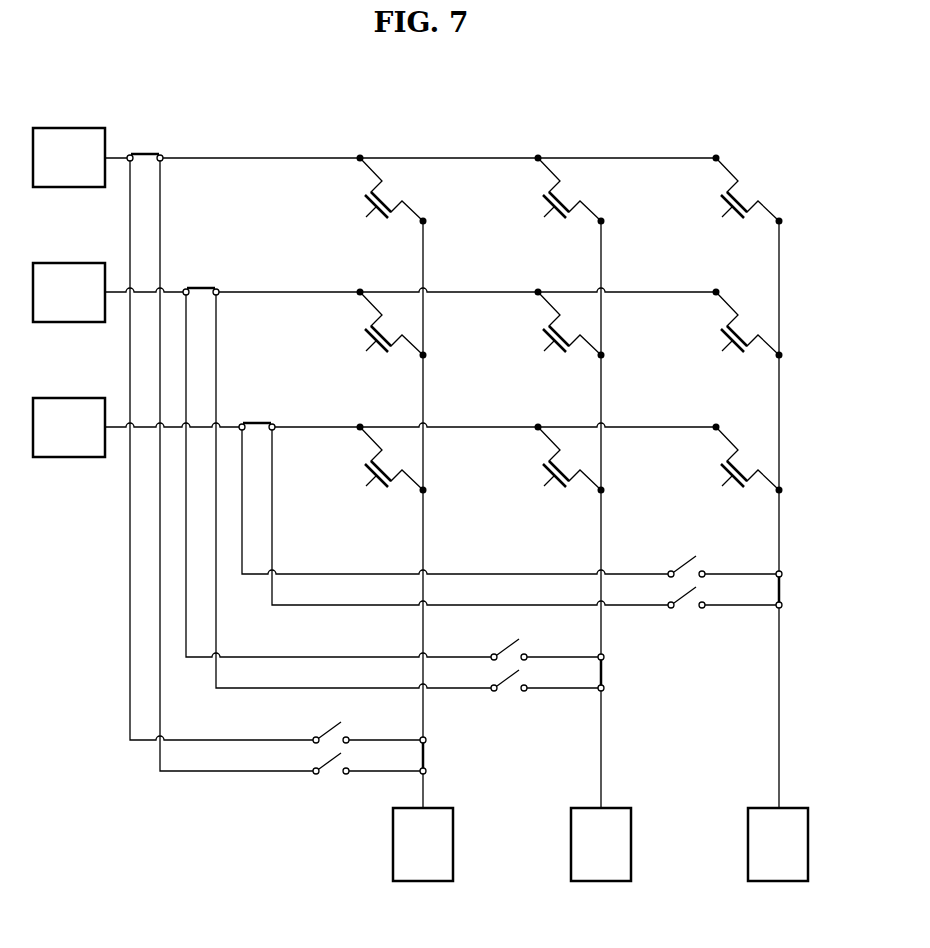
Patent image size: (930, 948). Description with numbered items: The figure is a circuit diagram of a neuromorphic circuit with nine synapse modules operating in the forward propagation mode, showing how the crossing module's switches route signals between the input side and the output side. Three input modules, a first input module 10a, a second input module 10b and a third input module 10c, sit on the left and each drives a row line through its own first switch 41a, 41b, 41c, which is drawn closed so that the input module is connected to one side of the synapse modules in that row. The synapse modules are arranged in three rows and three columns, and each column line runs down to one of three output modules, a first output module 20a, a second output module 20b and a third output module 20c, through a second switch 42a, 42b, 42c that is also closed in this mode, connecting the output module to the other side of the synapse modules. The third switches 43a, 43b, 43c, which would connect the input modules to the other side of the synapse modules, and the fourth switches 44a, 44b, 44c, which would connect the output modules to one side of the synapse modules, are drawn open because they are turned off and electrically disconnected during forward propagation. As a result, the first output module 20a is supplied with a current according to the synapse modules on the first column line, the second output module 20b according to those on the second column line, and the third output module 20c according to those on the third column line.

The first input module 10a is at (71, 128).
The second input module 10b is at (71, 263).
The third input module 10c is at (71, 398).
The first output module 20a is at (423, 883).
The second output module 20b is at (601, 883).
The third output module 20c is at (779, 883).
The first switch 41a is at (148, 153).
The first switch 41b is at (203, 288).
The first switch 41c is at (258, 423).
The second switch 42a is at (429, 756).
The second switch 42b is at (607, 671).
The second switch 42c is at (781, 571).
The third switch 43a is at (330, 727).
The third switch 43b is at (506, 645).
The third switch 43c is at (684, 559).
The fourth switch 44a is at (330, 770).
The fourth switch 44b is at (508, 684).
The fourth switch 44c is at (688, 601).